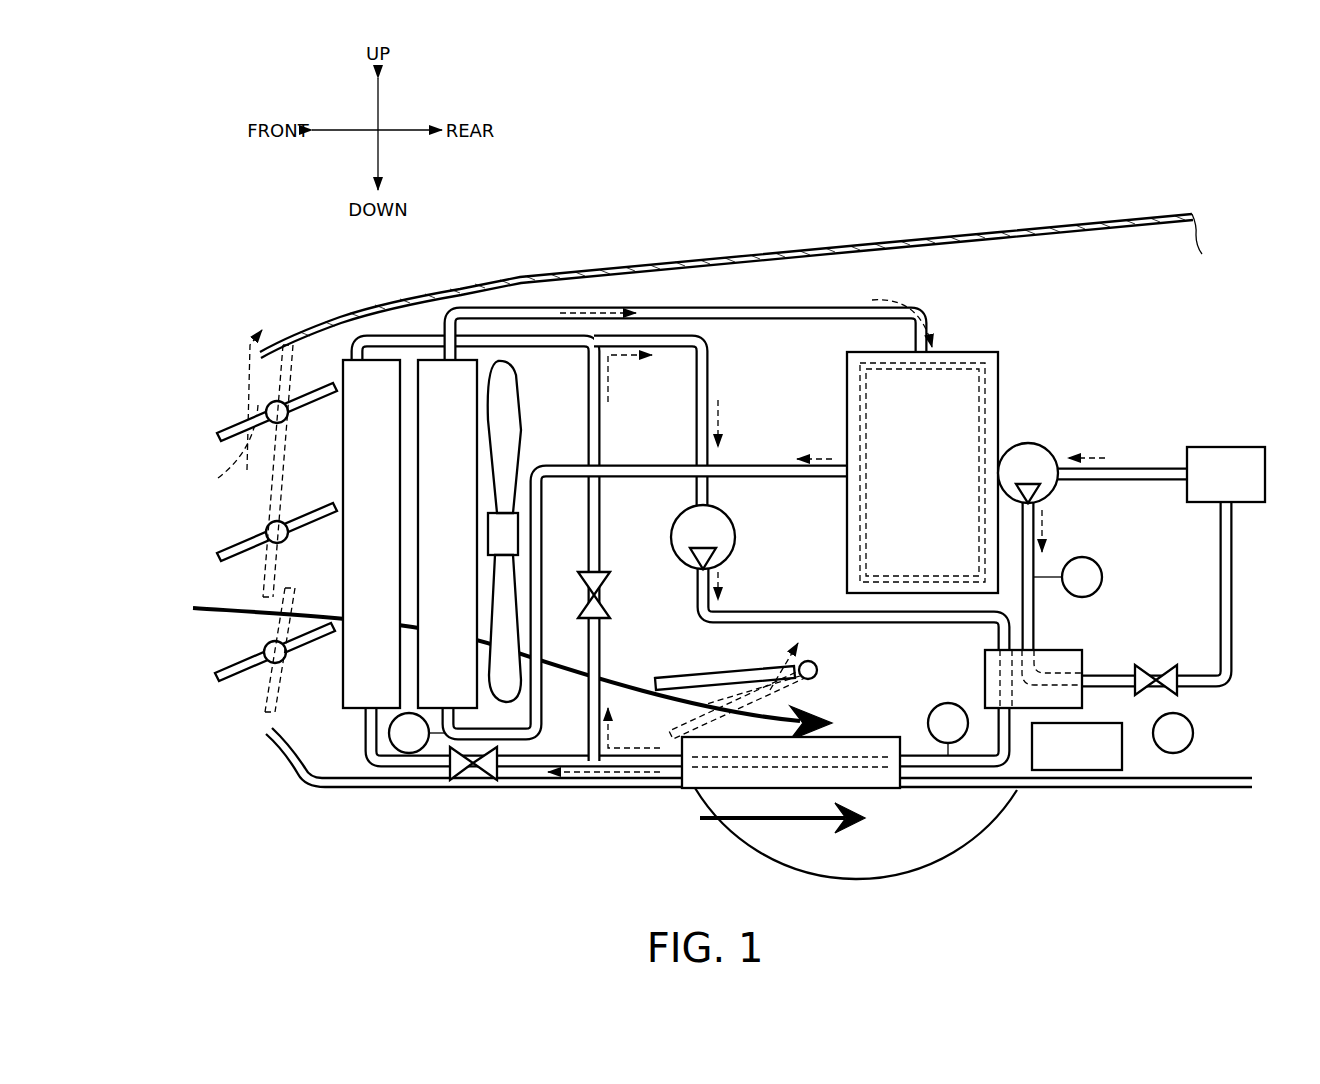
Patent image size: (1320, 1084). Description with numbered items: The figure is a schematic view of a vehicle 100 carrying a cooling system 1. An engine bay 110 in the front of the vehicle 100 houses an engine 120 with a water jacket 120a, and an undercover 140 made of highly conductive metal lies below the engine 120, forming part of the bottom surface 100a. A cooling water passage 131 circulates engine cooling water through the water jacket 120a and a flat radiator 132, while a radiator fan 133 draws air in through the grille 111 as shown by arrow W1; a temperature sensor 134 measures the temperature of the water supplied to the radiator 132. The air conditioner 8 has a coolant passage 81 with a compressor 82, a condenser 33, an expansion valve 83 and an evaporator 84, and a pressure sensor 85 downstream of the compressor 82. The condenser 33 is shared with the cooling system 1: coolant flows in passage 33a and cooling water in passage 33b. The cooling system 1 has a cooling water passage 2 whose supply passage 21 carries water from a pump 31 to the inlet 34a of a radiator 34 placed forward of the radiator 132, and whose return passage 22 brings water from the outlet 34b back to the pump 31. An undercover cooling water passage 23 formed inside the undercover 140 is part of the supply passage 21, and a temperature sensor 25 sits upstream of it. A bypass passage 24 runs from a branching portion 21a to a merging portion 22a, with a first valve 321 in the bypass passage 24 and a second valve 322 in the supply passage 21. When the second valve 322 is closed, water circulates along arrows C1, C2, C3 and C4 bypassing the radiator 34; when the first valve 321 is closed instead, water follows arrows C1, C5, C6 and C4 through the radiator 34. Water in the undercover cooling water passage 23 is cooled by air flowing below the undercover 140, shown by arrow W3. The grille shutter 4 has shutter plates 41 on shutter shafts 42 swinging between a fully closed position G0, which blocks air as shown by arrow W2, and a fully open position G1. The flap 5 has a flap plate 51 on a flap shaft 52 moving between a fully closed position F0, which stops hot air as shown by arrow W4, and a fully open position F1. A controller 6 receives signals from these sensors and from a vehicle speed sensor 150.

The cooling system 1 is at (1172, 765).
The cooling water passage 2 is at (423, 333).
The grille shutter 4 is at (240, 520).
The flap 5 is at (826, 650).
The controller 6 is at (1122, 757).
The air conditioner 8 is at (1146, 420).
The supply passage 21 is at (820, 612).
The branching portion 21a is at (588, 752).
The return passage 22 is at (697, 446).
The merging portion 22a is at (587, 350).
The undercover cooling water passage 23 is at (880, 777).
The bypass passage 24 is at (601, 515).
The temperature sensor 25 is at (928, 718).
The pump 31 is at (736, 531).
The condenser 33 is at (985, 655).
The passage 33a is at (1050, 662).
The passage 33b is at (985, 690).
The radiator 34 is at (352, 358).
The inlet 34a is at (365, 748).
The outlet 34b is at (360, 352).
The shutter plates 41 is at (225, 545).
The shutter shafts 42 is at (262, 468).
The flap plate 51 is at (683, 678).
The flap shaft 52 is at (818, 671).
The coolant passage 81 is at (1220, 571).
The compressor 82 is at (1042, 447).
The expansion valve 83 is at (1156, 665).
The evaporator 84 is at (1227, 447).
The pressure sensor 85 is at (1082, 557).
The vehicle 100 is at (987, 150).
The bottom surface 100a is at (1065, 789).
The engine bay 110 is at (1050, 240).
The grille 111 is at (272, 735).
The engine 120 is at (990, 352).
The water jacket 120a is at (1005, 380).
The cooling water passage 131 is at (868, 304).
The radiator 132 is at (490, 363).
The radiator fan 133 is at (521, 432).
The temperature sensor 134 is at (410, 754).
The undercover 140 is at (690, 792).
The vehicle speed sensor 150 is at (1194, 733).
The first valve 321 is at (610, 593).
The second valve 322 is at (471, 782).
The arrow C1 is at (724, 582).
The arrow C2 is at (640, 772).
The arrow C3 is at (612, 387).
The arrow C4 is at (723, 412).
The arrow C5 is at (582, 782).
The arrow C6 is at (598, 305).
The fully closed position F0 is at (775, 693).
The fully open position F1 is at (670, 684).
The fully closed position G0 is at (268, 708).
The fully open position G1 is at (225, 655).
The arrow W1 is at (478, 663).
The arrow W2 is at (248, 390).
The arrow W3 is at (760, 822).
The arrow W4 is at (772, 652).